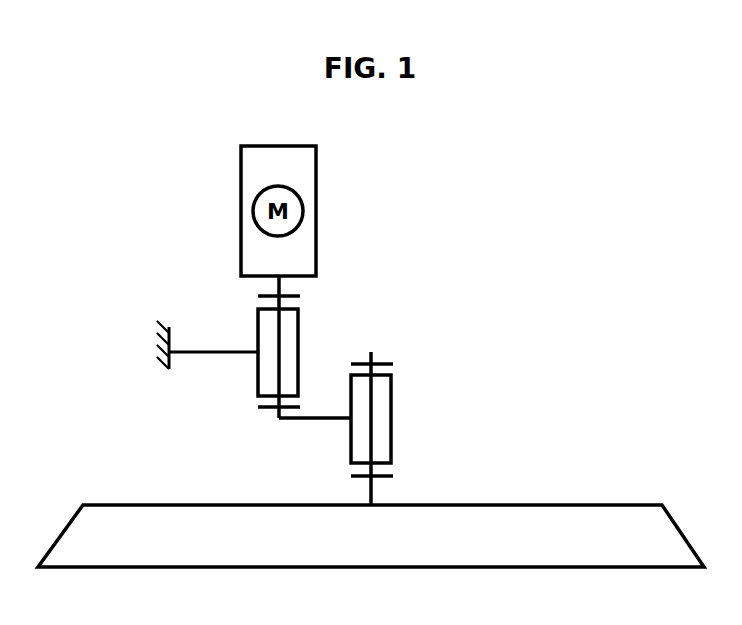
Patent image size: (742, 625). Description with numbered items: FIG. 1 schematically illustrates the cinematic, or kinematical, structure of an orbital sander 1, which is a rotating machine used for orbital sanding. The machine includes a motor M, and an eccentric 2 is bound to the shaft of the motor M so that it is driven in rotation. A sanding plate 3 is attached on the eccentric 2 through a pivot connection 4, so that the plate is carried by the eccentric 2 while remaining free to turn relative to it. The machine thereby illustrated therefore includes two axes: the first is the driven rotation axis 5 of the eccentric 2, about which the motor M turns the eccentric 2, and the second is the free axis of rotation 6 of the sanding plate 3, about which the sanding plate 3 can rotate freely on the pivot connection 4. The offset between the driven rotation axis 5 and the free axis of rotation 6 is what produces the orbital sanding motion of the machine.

The drive arrangement 1 is at (472, 323).
The eccentric 2 is at (258, 372).
The sanding plate 3 is at (443, 504).
The pivot connection 4 is at (351, 440).
The driven rotation axis 5 is at (284, 352).
The free axis of rotation 6 is at (374, 418).